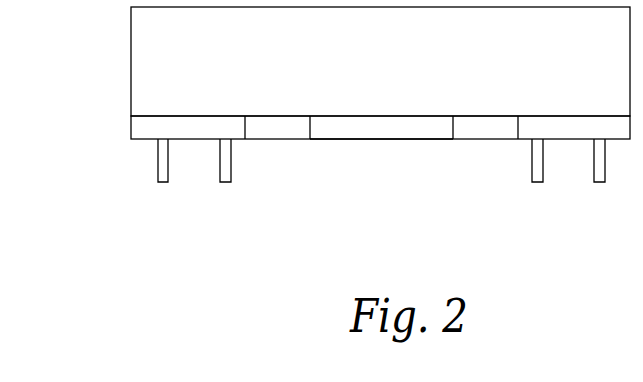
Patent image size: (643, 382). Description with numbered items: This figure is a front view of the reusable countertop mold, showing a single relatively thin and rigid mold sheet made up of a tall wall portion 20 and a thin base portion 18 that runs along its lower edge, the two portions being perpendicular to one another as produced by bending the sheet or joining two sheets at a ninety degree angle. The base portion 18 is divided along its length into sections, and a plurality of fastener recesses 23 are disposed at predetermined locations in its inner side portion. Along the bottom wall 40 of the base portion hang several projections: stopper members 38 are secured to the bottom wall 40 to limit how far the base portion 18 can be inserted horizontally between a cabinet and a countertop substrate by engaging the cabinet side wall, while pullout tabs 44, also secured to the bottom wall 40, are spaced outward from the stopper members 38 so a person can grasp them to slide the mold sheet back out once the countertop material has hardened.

The wall portion 20 is at (142, 40).
The base portion 18 is at (143, 127).
The fastener recesses 23 is at (276, 132).
The bottom wall 40 is at (383, 140).
The pullout tabs 44 is at (168, 183).
The stopper member 38 is at (225, 183).